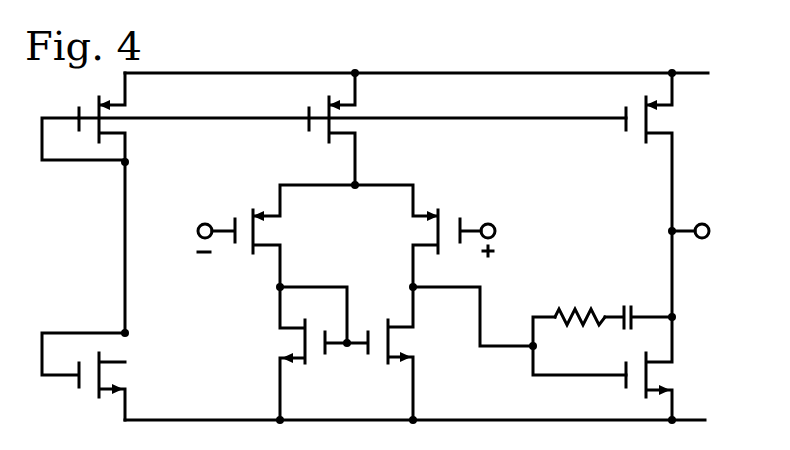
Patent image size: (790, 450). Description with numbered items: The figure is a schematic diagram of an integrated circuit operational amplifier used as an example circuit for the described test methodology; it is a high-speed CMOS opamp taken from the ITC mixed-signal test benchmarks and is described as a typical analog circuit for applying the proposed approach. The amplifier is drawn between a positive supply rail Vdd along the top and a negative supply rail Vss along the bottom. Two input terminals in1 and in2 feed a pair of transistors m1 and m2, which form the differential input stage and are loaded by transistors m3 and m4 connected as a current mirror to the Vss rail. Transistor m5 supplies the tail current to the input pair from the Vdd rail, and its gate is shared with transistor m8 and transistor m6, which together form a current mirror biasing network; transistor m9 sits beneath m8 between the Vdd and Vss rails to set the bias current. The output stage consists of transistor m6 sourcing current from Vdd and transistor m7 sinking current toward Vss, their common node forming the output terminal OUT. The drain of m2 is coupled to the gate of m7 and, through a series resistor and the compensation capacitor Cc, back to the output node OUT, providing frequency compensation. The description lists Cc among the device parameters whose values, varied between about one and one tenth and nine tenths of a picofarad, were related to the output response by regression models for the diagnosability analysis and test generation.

The first input transistor (PMOS) m1 is at (283, 238).
The second input transistor (PMOS) m2 is at (418, 238).
The current mirror load transistor (NMOS) m3 is at (315, 353).
The current mirror load transistor (NMOS) m4 is at (380, 353).
The tail current source transistor (PMOS) m5 is at (353, 131).
The output stage current source transistor (PMOS) m6 is at (622, 152).
The output stage driver transistor (NMOS) m7 is at (626, 368).
The bias current mirror transistor (PMOS) m8 is at (107, 119).
The bias transistor (NMOS) m9 is at (85, 291).
The compensation capacitor Cc is at (604, 324).
The inverting input terminal in1 is at (192, 225).
The non-inverting input terminal in2 is at (502, 228).
The output terminal OUT is at (712, 260).
The positive supply rail Vdd is at (436, 78).
The negative supply rail Vss is at (435, 424).